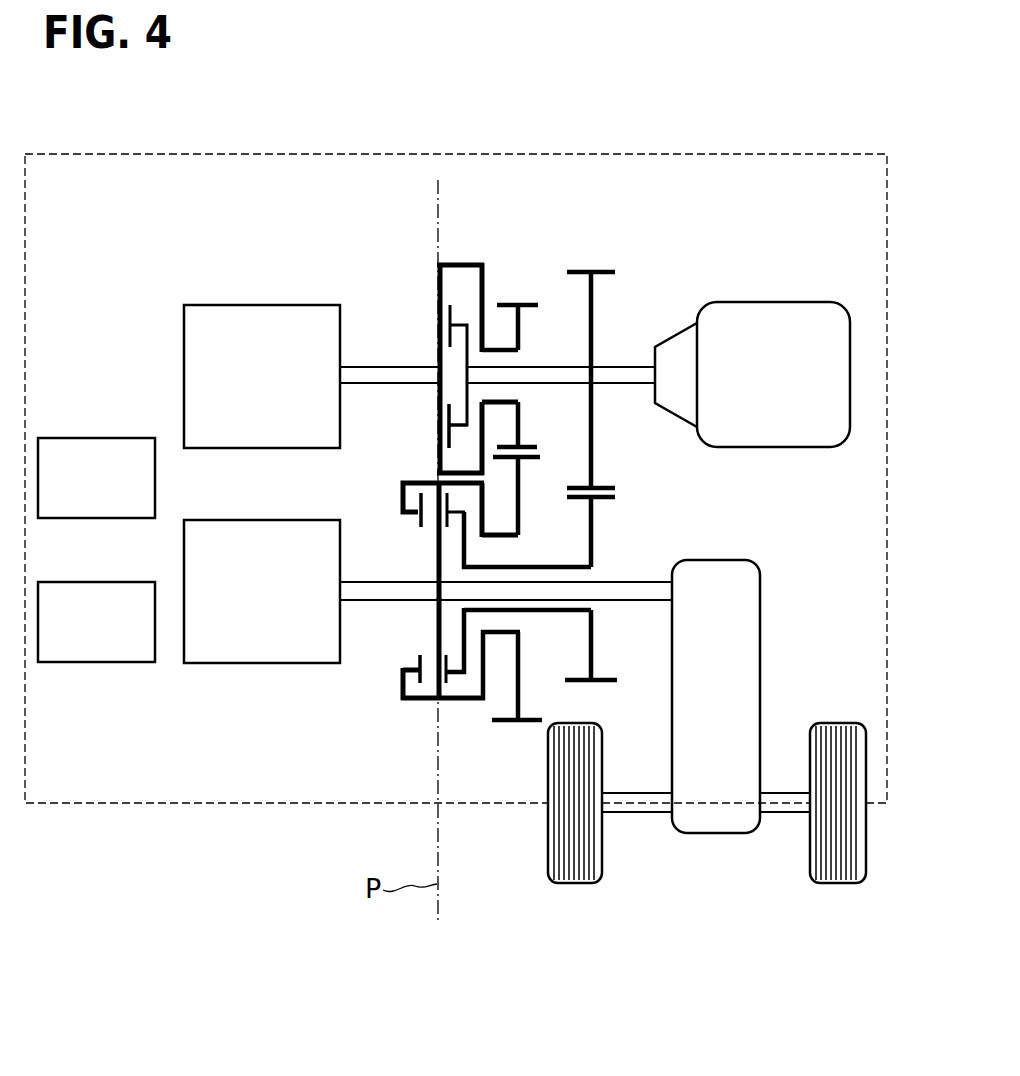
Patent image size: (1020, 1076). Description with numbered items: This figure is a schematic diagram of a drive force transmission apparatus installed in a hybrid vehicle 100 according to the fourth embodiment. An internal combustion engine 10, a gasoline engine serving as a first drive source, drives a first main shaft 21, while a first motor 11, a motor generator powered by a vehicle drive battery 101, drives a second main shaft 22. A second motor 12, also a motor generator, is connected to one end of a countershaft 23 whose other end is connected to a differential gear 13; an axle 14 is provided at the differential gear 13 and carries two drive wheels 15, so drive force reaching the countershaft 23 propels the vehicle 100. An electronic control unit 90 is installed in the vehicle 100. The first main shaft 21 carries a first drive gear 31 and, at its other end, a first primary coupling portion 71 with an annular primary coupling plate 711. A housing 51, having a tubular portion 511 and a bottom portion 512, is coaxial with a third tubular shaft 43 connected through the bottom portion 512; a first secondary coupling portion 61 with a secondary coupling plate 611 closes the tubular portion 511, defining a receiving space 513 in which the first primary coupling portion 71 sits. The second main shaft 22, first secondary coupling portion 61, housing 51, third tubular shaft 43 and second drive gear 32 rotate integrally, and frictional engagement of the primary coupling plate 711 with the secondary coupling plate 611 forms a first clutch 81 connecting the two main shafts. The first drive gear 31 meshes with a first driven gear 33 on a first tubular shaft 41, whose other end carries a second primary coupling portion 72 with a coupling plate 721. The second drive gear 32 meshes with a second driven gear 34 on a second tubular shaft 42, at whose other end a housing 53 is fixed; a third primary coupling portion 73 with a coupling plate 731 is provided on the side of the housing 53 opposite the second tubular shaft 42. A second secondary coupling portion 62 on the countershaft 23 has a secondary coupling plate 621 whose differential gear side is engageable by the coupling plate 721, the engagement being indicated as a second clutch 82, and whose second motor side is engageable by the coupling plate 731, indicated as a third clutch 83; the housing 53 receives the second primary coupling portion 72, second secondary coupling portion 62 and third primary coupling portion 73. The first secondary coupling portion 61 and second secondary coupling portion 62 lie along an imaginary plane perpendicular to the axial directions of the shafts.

The vehicle 100 is at (427, 152).
The internal combustion engine 10 is at (777, 302).
The first motor 11 is at (184, 332).
The second motor 12 is at (184, 548).
The differential gear 13 is at (755, 616).
The axle 14 is at (650, 815).
The drive wheels 15 is at (573, 885).
The first main shaft 21 is at (618, 367).
The second main shaft 22 is at (420, 366).
The countershaft 23 is at (642, 582).
The first drive gear 31 is at (592, 270).
The second drive gear 32 is at (518, 304).
The first driven gear 33 is at (593, 684).
The second driven gear 34 is at (518, 724).
The first tubular shaft 41 is at (563, 567).
The second tubular shaft 42 is at (493, 534).
The third tubular shaft 43 is at (505, 349).
The housing 51 is at (442, 360).
The tubular portion 511 is at (444, 265).
The bottom portion 512 is at (482, 295).
The receiving space 513 is at (452, 290).
The housing 53 is at (459, 703).
The first secondary coupling portion 61 is at (437, 282).
The secondary coupling plate 611 is at (437, 318).
The second secondary coupling portion 62 is at (436, 610).
The secondary coupling plate 621 is at (437, 564).
The first primary coupling portion 71 is at (437, 416).
The primary coupling plate 711 is at (448, 434).
The second primary coupling portion 72 is at (437, 684).
The coupling plate 721 is at (440, 675).
The third primary coupling portion 73 is at (420, 519).
The coupling plate 731 is at (430, 516).
The first clutch 81 is at (417, 431).
The second engagement portion 82 is at (425, 645).
The third engagement portion 83 is at (416, 540).
The electronic control unit 90 is at (90, 663).
The vehicle drive battery 101 is at (91, 438).